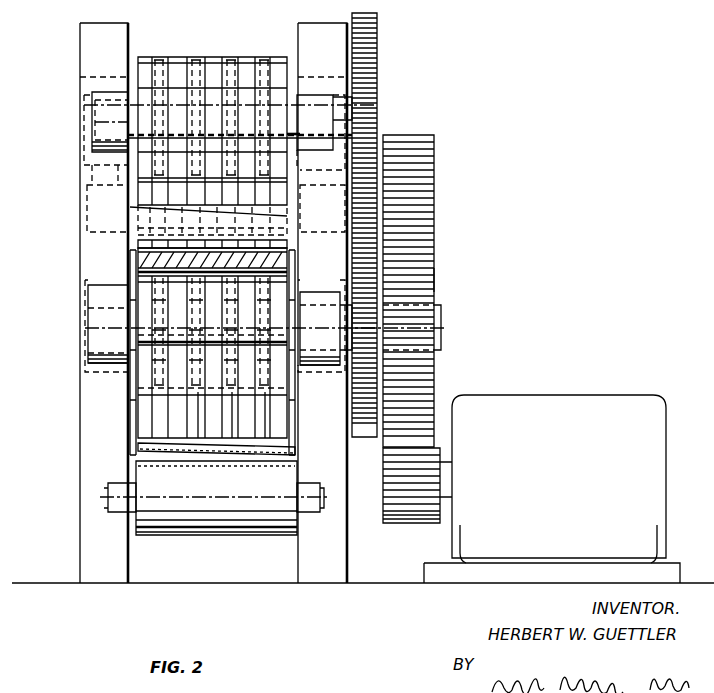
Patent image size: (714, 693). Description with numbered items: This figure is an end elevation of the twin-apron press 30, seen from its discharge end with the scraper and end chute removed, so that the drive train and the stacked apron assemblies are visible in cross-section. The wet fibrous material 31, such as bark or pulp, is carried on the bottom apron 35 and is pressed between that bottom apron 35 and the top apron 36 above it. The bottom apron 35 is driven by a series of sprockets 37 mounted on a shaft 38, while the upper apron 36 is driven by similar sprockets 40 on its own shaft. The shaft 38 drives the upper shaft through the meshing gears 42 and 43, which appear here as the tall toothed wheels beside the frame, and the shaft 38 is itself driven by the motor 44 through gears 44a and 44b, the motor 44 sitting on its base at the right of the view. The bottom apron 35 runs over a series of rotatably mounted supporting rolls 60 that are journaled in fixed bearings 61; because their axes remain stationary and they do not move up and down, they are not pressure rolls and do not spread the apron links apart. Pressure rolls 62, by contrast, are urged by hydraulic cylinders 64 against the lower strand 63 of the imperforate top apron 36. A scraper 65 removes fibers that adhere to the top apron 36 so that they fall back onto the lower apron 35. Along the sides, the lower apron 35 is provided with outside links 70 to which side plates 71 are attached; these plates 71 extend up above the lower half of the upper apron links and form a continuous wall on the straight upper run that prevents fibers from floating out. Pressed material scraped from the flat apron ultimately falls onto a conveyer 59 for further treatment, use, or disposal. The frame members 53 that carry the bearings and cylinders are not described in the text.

The twin-apron press 30 is at (70, 67).
The wet fibrous material 31 is at (290, 256).
The bottom apron 35 is at (188, 440).
The top apron 36 is at (217, 57).
The sprockets 37 is at (256, 395).
The shaft 38 is at (440, 338).
The sprockets 40 is at (198, 60).
The gear 42 is at (376, 252).
The gear 43 is at (378, 74).
The motor 44 is at (612, 396).
The gear 44a is at (383, 505).
The gear 44b is at (493, 278).
The frame posts 53 is at (80, 396).
The conveyer 59 is at (242, 446).
The supporting rolls 60 is at (210, 286).
The fixed bearings 61 is at (86, 283).
The pressure rolls 62 is at (295, 198).
The lower strand 63 is at (229, 232).
The hydraulic cylinders 64 is at (75, 155).
The scraper 65 is at (128, 220).
The outside links 70 is at (143, 282).
The side plates 71 is at (137, 262).